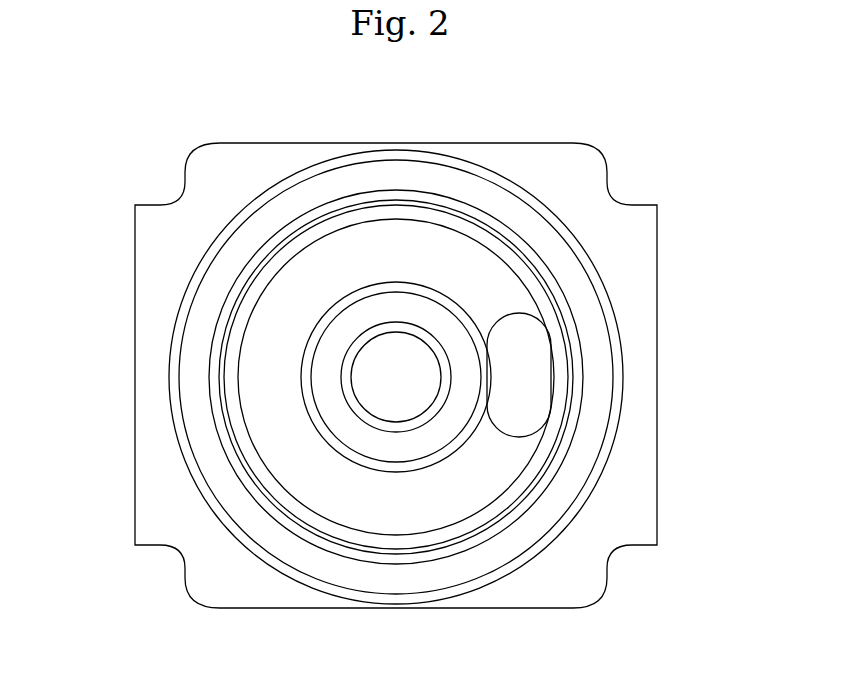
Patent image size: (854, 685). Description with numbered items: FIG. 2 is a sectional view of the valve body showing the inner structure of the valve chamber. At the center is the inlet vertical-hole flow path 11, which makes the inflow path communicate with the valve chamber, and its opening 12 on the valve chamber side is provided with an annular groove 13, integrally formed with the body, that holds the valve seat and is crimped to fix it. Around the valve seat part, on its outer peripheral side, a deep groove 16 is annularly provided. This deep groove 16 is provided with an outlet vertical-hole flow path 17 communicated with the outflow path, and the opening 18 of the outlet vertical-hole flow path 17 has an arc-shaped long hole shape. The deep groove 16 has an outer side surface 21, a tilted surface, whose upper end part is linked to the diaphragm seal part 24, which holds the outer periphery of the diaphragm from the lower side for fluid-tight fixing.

The inlet vertical-hole flow path 11 is at (396, 370).
The opening 12 is at (352, 378).
The annular groove 13 is at (399, 442).
The deep groove 16 is at (333, 483).
The outlet vertical-hole flow path 17 is at (532, 353).
The opening 18 is at (532, 423).
The outer side surface 21 is at (247, 445).
The diaphragm seal part 24 is at (222, 397).